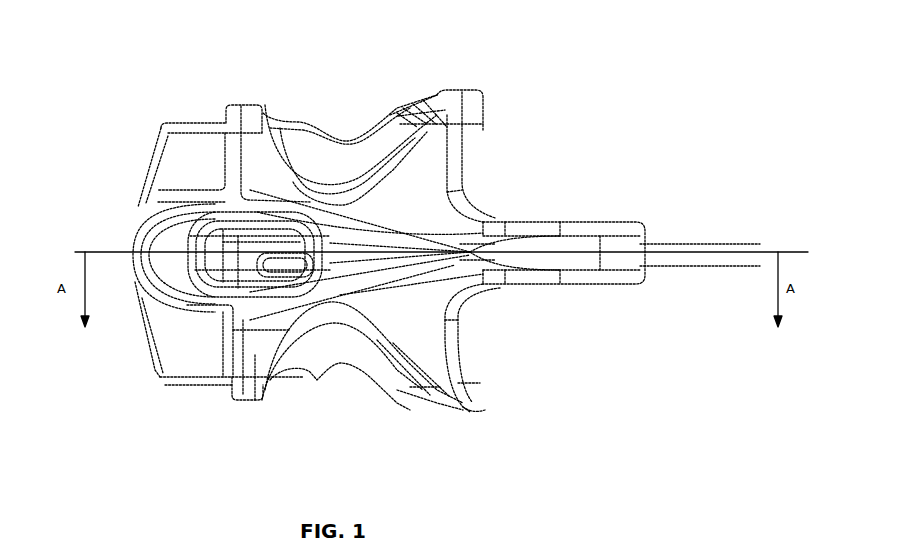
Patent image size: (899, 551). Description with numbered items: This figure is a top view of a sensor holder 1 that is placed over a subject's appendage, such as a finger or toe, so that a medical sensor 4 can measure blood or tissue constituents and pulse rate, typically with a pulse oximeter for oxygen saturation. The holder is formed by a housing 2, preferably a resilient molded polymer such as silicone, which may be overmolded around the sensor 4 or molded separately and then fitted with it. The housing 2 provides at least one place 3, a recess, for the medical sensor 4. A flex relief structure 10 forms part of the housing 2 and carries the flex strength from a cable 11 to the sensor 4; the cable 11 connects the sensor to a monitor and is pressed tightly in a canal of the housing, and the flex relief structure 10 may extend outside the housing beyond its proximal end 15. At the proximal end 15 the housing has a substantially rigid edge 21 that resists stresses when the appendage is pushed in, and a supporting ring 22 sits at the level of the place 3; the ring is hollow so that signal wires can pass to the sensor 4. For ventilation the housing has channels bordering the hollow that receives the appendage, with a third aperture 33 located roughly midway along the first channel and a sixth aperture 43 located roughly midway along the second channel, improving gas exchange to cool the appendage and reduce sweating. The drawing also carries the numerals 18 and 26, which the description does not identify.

The sensor holder 1 is at (150, 102).
The housing 2 is at (433, 123).
The place for the medical sensor 3 is at (218, 282).
The medical sensor 4 is at (243, 245).
The flex relief structure 10 is at (535, 238).
The cable 11 is at (682, 245).
The proximal end 15 is at (470, 350).
The housing ring 18 is at (150, 345).
The rigid edge 21 is at (478, 128).
The supporting ring 22 is at (257, 355).
The lower tube end 26 is at (423, 338).
The third aperture 33 is at (348, 127).
The sixth aperture 43 is at (357, 380).